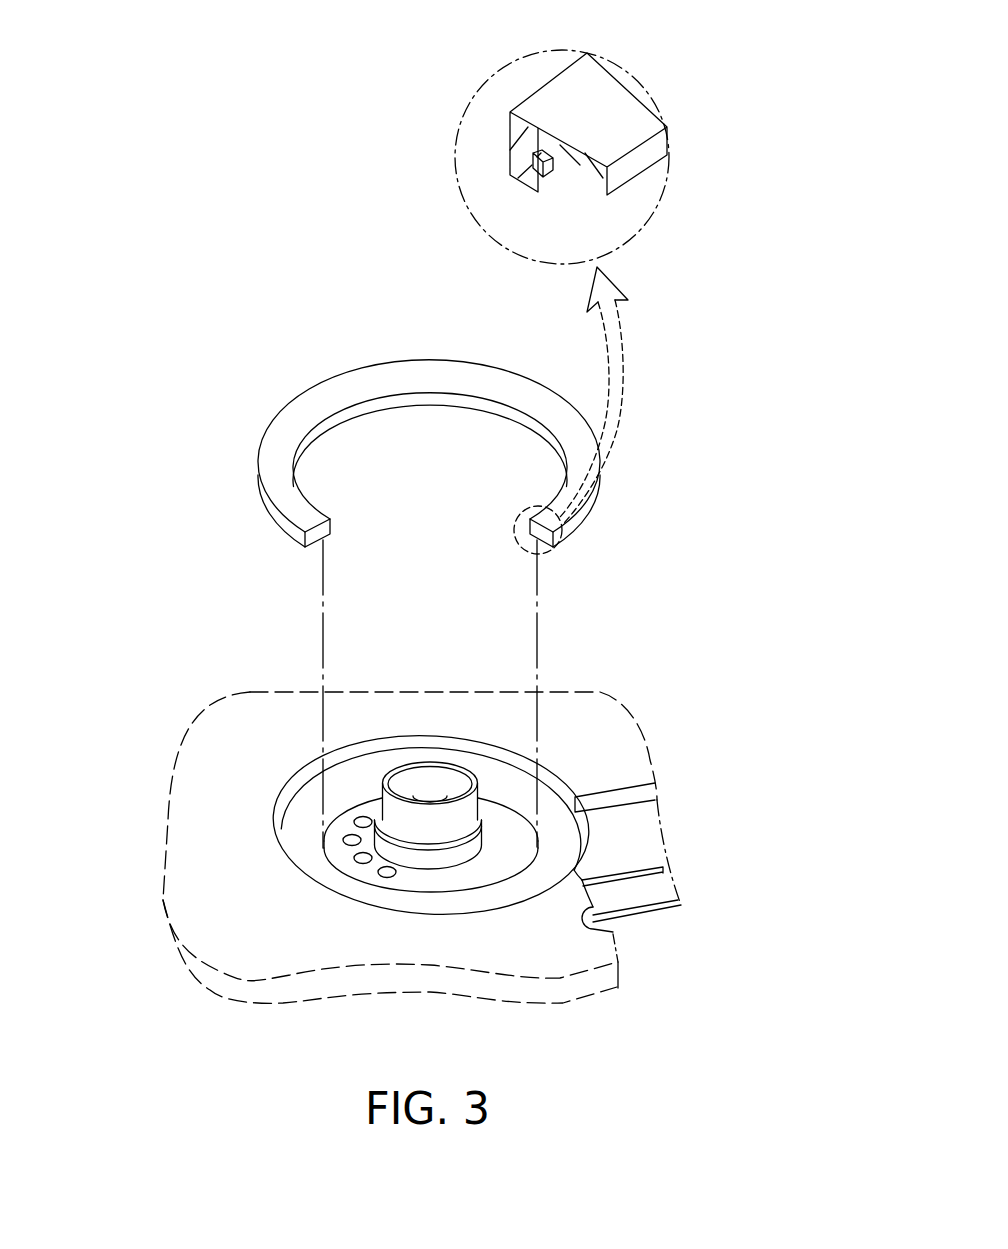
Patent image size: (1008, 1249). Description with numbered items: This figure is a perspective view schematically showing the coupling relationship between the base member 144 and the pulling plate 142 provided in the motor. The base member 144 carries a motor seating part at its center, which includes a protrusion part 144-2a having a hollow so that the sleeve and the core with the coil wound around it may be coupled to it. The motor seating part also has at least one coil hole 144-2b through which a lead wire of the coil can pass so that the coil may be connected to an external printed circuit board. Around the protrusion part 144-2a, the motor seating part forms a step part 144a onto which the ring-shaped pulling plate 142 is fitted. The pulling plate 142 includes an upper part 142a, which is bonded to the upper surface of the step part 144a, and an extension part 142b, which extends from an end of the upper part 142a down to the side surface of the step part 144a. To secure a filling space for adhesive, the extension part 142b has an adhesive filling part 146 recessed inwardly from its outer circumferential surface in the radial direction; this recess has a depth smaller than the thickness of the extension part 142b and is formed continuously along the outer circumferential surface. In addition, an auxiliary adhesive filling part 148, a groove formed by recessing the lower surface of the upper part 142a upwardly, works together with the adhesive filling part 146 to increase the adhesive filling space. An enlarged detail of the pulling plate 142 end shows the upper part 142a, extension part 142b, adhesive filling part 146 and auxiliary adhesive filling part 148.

The pulling plate 142 is at (254, 462).
The upper part 142a is at (583, 167).
The extension part 142b is at (531, 179).
The adhesive filling part 146 is at (532, 162).
The auxiliary adhesive filling part 148 is at (537, 156).
The base member 144 is at (196, 831).
The step part 144a is at (590, 866).
The protrusion part 144-2a is at (482, 796).
The coil hole 144-2b is at (357, 865).